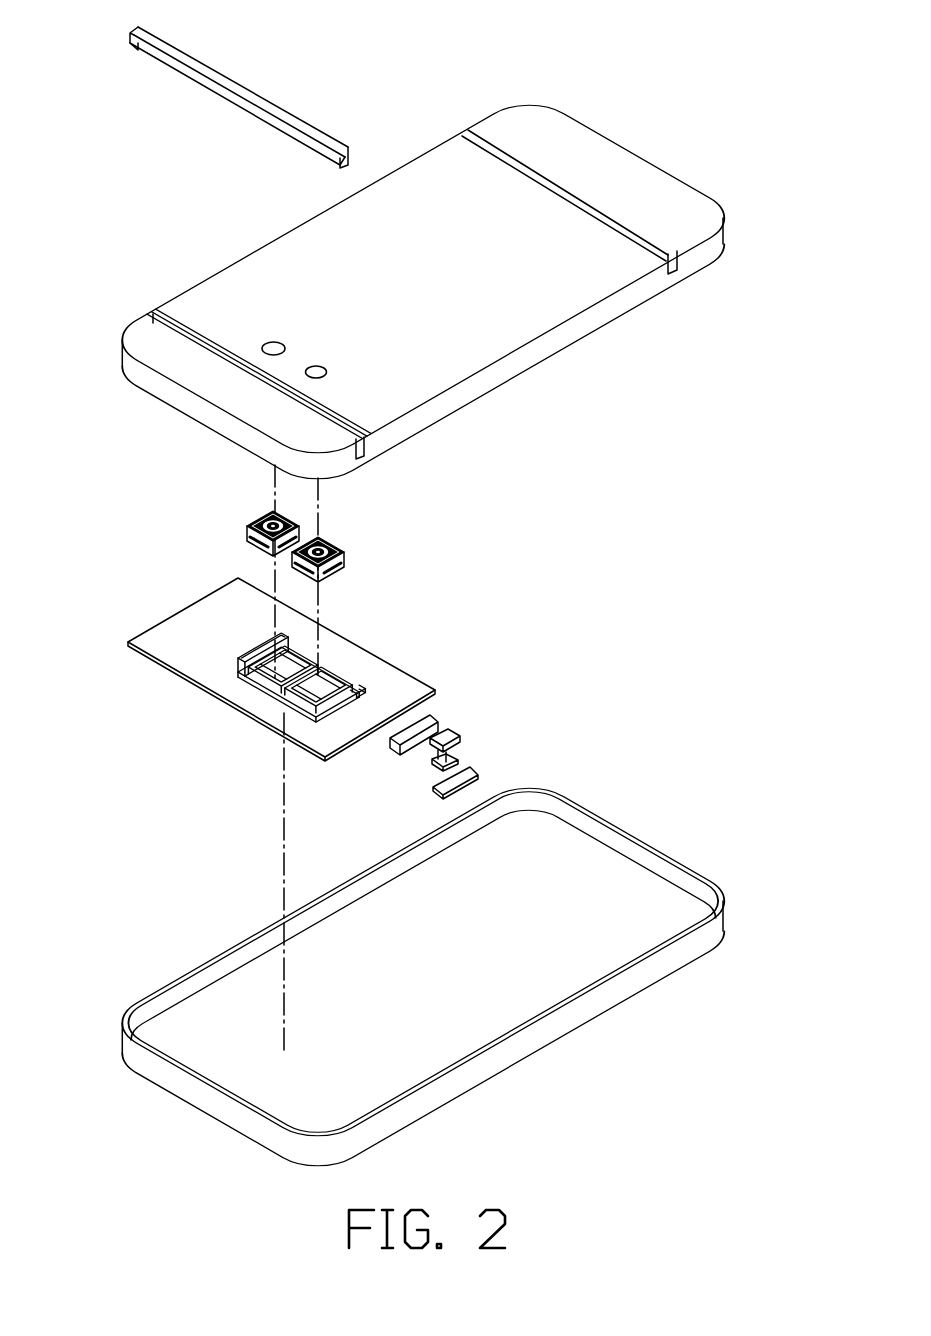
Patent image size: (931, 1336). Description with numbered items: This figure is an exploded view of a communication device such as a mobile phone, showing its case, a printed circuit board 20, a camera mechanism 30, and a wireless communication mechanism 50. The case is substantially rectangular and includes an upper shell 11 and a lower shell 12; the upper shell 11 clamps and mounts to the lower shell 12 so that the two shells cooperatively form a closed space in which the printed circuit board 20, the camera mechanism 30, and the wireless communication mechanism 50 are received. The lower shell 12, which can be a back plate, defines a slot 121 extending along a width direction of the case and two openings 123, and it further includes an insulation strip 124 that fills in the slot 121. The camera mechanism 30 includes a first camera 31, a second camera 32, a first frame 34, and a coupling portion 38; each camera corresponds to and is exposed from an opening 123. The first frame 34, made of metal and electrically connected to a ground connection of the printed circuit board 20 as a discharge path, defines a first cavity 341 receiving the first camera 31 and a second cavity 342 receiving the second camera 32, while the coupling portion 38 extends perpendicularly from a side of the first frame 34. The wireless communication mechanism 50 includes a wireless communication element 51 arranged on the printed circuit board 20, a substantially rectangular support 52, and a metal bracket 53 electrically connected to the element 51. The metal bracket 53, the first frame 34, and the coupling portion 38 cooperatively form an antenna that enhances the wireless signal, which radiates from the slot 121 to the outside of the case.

The upper shell 11 is at (598, 997).
The lower shell 12 is at (396, 292).
The slot 121 is at (153, 320).
The opening 123 is at (272, 342).
The insulation strip 124 is at (267, 107).
The printed circuit board 20 is at (188, 670).
The camera mechanism 30 is at (336, 636).
The first camera 31 is at (342, 558).
The second camera 32 is at (297, 532).
The first frame 34 is at (300, 669).
The first cavity 341 is at (297, 697).
The second cavity 342 is at (253, 680).
The coupling portion 38 is at (404, 654).
The wireless communication mechanism 50 is at (502, 731).
The wireless communication element 51 is at (468, 770).
The support 52 is at (430, 717).
The metal bracket 53 is at (452, 737).